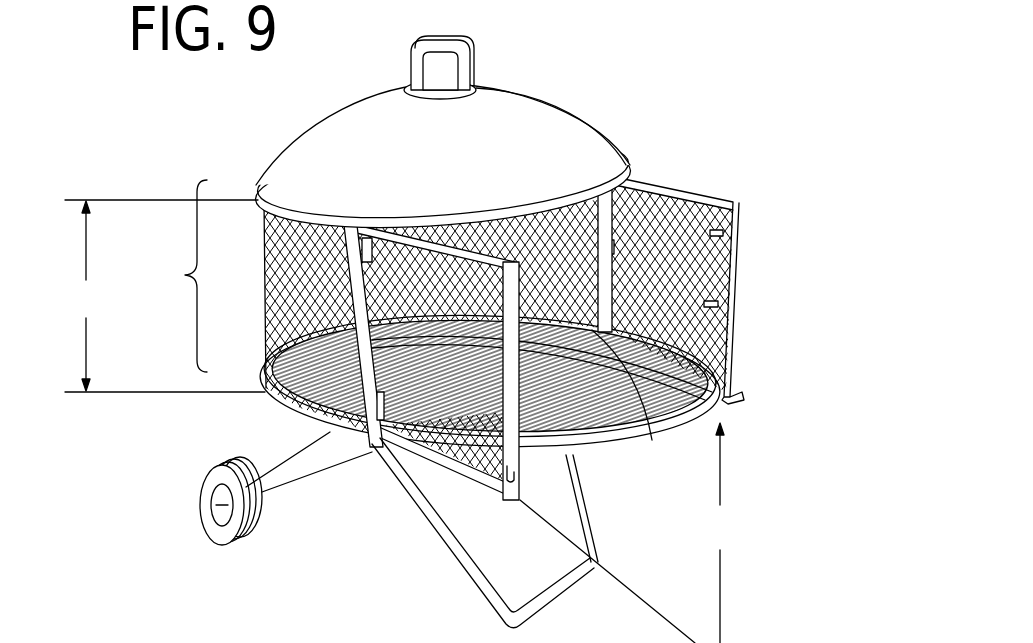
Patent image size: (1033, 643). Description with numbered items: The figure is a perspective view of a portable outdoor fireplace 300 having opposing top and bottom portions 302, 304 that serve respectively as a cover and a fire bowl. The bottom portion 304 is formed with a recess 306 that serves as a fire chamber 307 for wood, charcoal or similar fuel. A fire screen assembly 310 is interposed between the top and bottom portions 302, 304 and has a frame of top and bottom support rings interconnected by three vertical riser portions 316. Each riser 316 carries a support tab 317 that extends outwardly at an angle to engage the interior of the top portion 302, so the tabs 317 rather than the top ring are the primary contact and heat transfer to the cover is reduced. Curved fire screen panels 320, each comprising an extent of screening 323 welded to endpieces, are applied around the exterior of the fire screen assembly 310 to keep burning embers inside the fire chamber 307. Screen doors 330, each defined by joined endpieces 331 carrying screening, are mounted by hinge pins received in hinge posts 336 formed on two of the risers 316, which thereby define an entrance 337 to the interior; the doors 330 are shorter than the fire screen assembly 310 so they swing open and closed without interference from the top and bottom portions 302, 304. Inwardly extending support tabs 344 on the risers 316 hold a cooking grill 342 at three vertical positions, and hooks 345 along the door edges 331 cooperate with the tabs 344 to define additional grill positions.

The fireplace 300 is at (186, 275).
The top portion 302 is at (523, 98).
The bottom portion 304 is at (280, 398).
The recess 306 is at (308, 387).
The fire chamber 307 is at (410, 330).
The fire screen assembly 310 is at (266, 344).
The vertical riser portions 316 is at (612, 215).
The support tab 317 is at (640, 338).
The fire screen panels 320 is at (556, 265).
The screening 323 is at (283, 298).
The screen doors 330 is at (723, 273).
The door endpieces 331 is at (713, 203).
The hinge posts 336 is at (383, 403).
The entrance 337 is at (720, 409).
The cooking grill 342 is at (680, 430).
The support tabs 344 is at (613, 247).
The hooks 345 is at (723, 233).